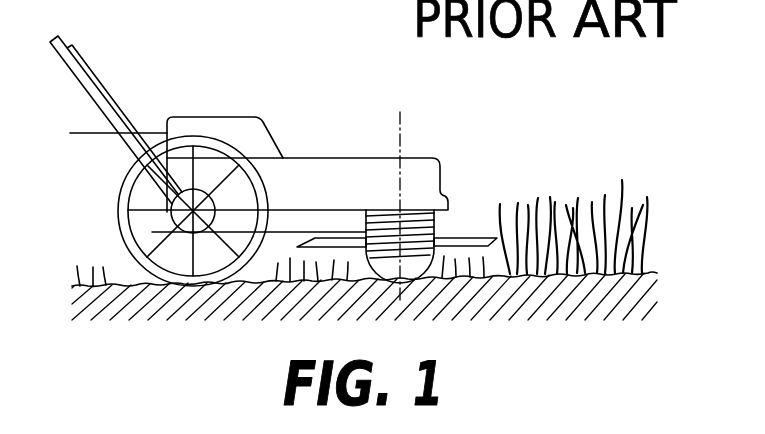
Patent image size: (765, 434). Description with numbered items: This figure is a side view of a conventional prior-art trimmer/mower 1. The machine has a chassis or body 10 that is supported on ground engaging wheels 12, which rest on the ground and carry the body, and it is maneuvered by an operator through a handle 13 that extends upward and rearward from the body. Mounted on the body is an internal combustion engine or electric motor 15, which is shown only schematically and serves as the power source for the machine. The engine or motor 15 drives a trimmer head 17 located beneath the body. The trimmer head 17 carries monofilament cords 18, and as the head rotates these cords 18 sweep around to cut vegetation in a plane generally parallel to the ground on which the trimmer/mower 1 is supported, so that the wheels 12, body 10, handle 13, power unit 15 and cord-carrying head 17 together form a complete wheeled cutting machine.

The trimmer/mower 1 is at (452, 140).
The chassis or body 10 is at (305, 158).
The ground engaging wheels 12 is at (120, 210).
The handle 13 is at (109, 90).
The internal combustion engine or electric motor 15 is at (242, 122).
The trimmer head 17 is at (448, 246).
The monofilament cords 18 is at (472, 246).